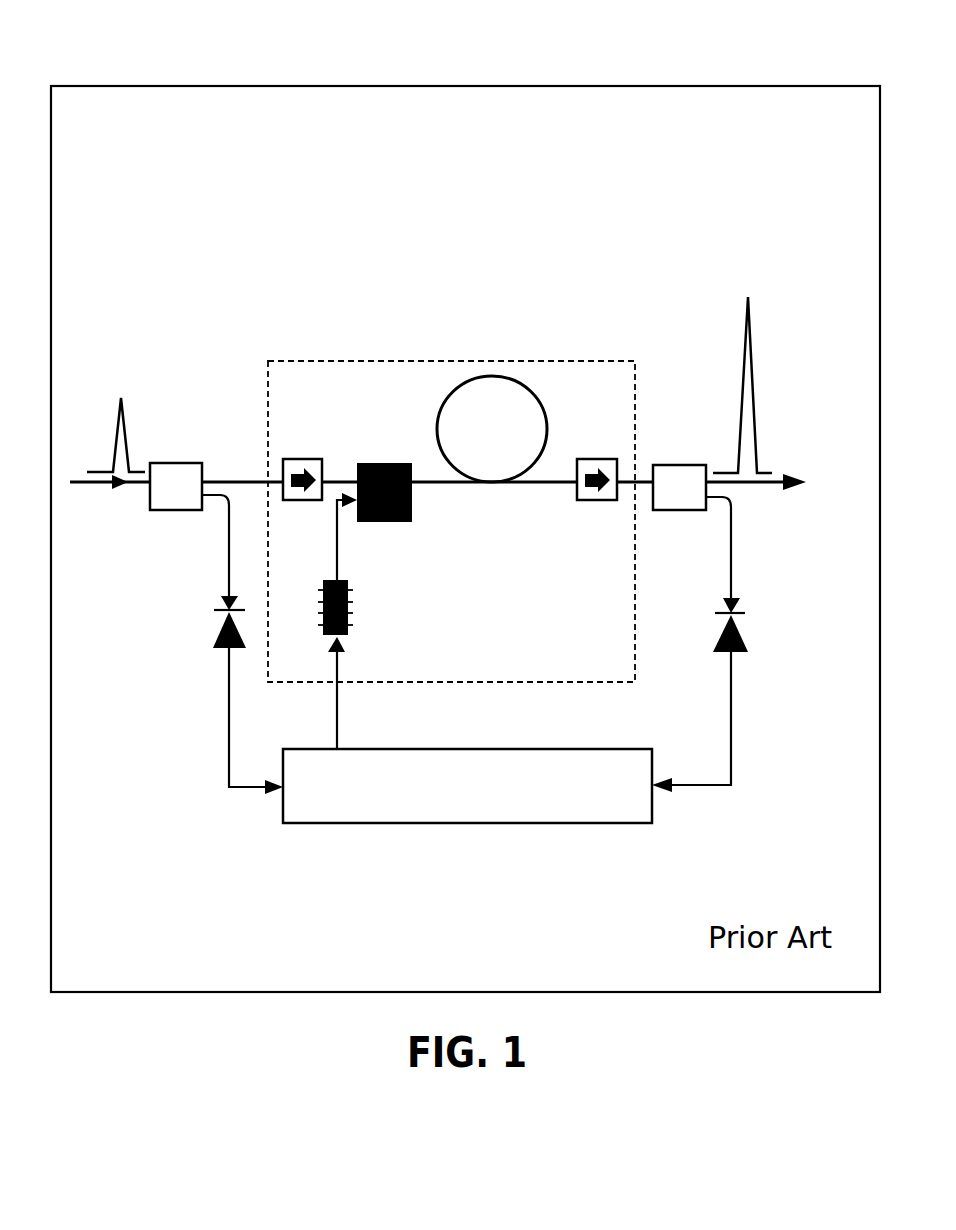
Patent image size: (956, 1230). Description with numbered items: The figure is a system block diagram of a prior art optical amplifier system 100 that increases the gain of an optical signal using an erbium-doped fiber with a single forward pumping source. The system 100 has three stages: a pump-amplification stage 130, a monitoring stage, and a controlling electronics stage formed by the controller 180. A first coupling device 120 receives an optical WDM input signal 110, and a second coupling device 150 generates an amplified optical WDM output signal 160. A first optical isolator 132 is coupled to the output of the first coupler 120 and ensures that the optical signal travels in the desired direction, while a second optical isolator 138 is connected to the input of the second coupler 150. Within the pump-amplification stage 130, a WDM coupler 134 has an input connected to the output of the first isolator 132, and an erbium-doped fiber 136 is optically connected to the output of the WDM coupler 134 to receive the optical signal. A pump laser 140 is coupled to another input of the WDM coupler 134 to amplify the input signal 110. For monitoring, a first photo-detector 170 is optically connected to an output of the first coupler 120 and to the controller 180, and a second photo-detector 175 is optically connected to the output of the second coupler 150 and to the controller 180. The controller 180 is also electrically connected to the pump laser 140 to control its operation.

The optical amplifier system 100 is at (497, 48).
The optical WDM input signal 110 is at (126, 427).
The first coupling device 120 is at (193, 470).
The pump-amplification stage 130 is at (437, 360).
The first optical isolator 132 is at (298, 467).
The WDM coupler 134 is at (373, 465).
The erbium-doped fiber 136 is at (502, 413).
The second optical isolator 138 is at (605, 467).
The pump laser 140 is at (350, 613).
The second coupling device 150 is at (677, 475).
The amplified optical WDM output signal 160 is at (755, 407).
The first photo-detector 170 is at (218, 647).
The second photo-detector 175 is at (735, 653).
The controller 180 is at (317, 793).